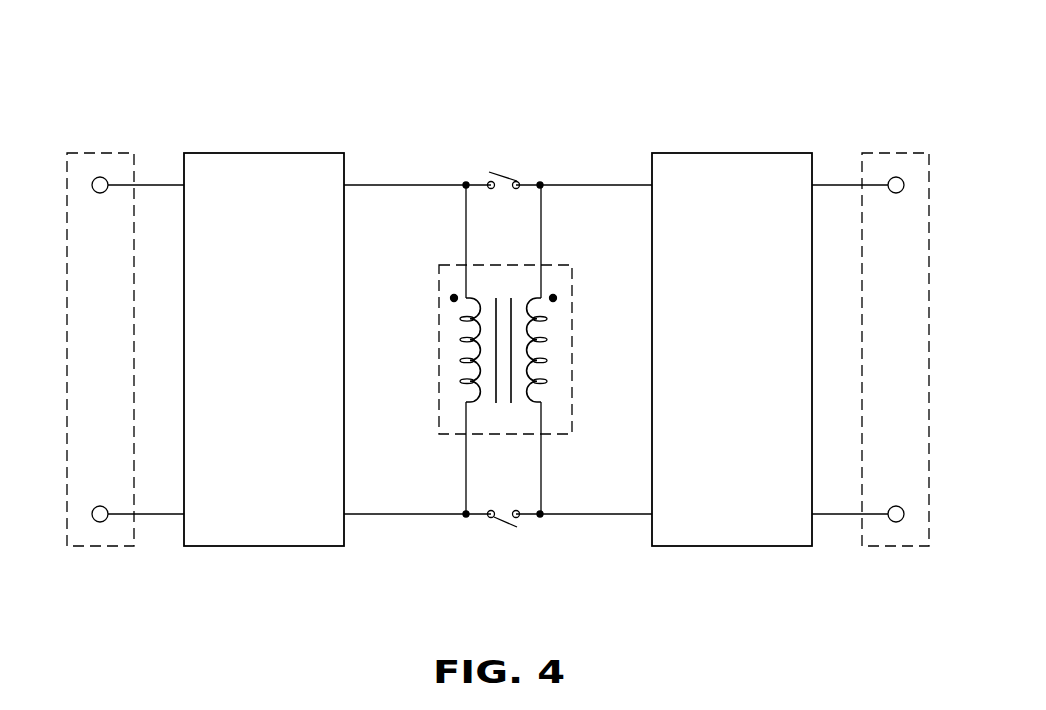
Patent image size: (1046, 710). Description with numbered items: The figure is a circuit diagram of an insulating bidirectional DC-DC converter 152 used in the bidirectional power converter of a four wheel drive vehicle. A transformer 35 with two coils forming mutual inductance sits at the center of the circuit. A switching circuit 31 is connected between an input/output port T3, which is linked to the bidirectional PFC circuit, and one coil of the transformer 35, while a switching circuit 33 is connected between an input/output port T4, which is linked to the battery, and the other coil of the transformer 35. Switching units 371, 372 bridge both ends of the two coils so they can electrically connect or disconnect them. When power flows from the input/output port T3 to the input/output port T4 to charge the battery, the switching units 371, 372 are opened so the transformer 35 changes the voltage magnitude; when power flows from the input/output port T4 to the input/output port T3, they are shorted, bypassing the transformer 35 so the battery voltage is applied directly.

The bidirectional DC-DC converter 152 is at (396, 120).
The switching circuit 31 is at (240, 153).
The switching circuit 33 is at (751, 153).
The transformer 35 is at (443, 436).
The switching unit 371 is at (504, 176).
The switching unit 372 is at (502, 526).
The input/output port T3 is at (95, 153).
The input/output port T4 is at (905, 153).